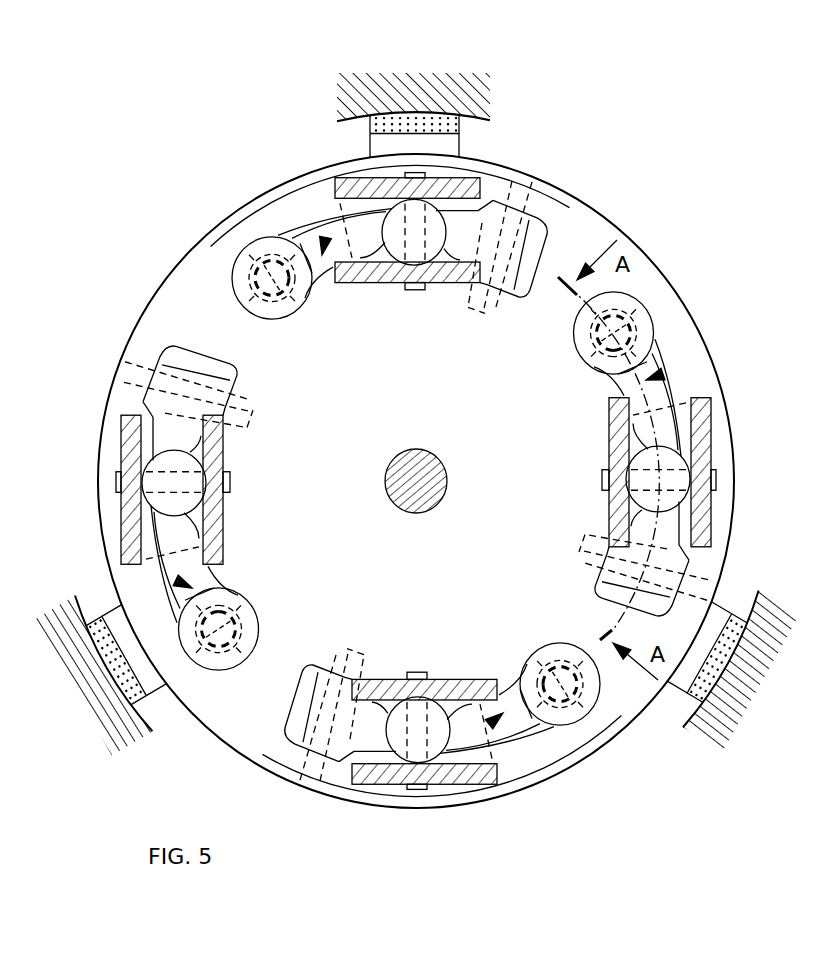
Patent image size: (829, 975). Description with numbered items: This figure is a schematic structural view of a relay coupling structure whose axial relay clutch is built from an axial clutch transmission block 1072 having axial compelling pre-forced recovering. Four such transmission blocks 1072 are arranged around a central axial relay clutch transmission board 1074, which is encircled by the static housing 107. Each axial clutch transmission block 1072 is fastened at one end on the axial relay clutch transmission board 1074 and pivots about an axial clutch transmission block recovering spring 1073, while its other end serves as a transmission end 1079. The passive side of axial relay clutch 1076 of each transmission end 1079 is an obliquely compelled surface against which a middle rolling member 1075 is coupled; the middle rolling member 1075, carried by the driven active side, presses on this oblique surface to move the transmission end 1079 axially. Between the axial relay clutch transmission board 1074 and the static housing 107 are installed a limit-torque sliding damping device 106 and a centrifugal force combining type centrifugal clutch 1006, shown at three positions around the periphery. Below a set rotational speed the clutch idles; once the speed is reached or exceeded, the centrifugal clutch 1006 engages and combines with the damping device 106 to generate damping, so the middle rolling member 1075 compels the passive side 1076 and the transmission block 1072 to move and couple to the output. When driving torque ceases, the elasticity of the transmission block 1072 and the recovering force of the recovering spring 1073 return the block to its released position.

The limit-torque sliding damping device 106 is at (412, 120).
The static housing 107 is at (358, 95).
The centrifugal force combining type centrifugal clutch 1006 is at (437, 147).
The axial clutch transmission block 1072 is at (550, 232).
The axial clutch transmission block recovering spring 1073 is at (270, 300).
The axial relay clutch transmission board 1074 is at (162, 280).
The middle rolling member 1075 is at (383, 238).
The passive side of axial relay clutch 1076 is at (318, 228).
The transmission end 1079 is at (324, 250).